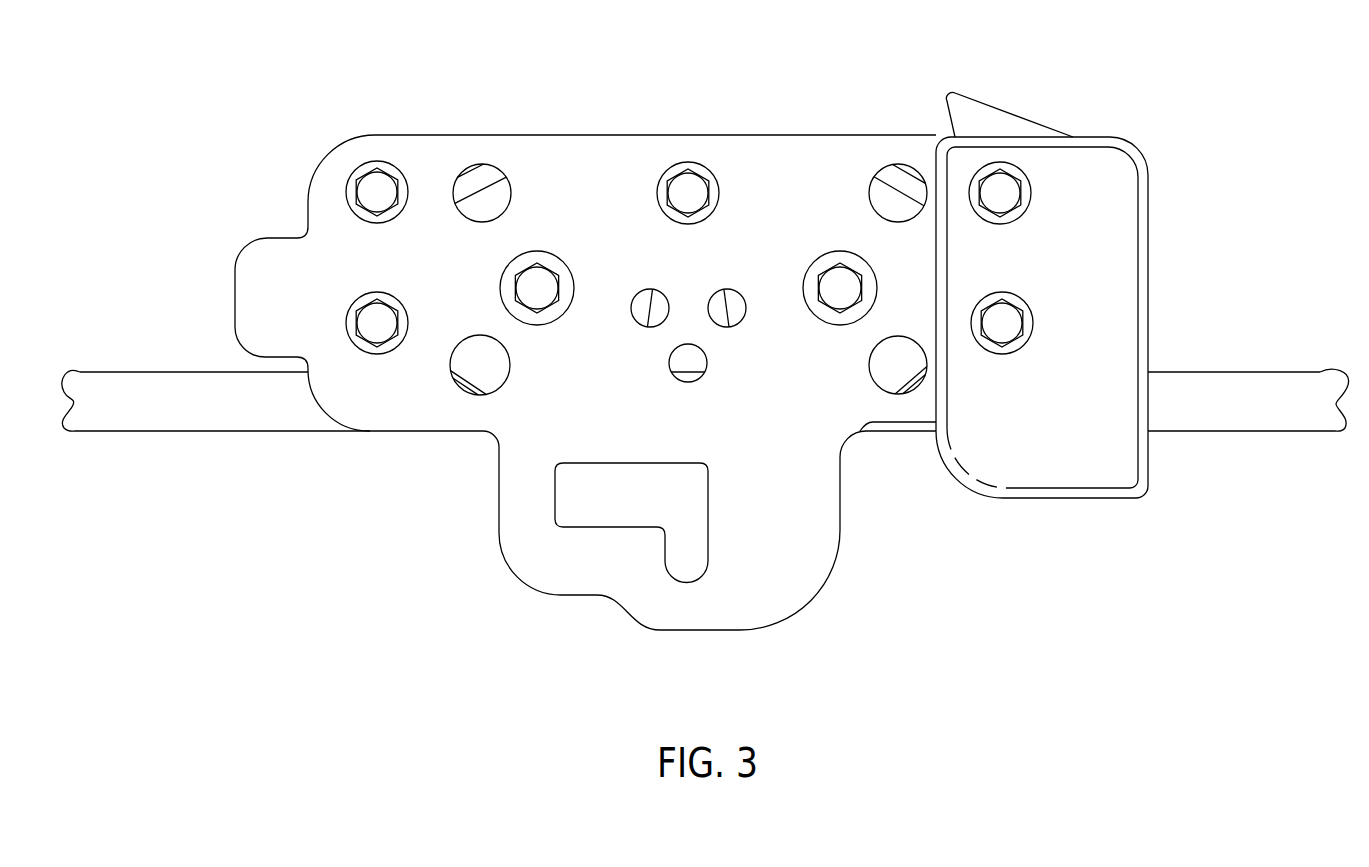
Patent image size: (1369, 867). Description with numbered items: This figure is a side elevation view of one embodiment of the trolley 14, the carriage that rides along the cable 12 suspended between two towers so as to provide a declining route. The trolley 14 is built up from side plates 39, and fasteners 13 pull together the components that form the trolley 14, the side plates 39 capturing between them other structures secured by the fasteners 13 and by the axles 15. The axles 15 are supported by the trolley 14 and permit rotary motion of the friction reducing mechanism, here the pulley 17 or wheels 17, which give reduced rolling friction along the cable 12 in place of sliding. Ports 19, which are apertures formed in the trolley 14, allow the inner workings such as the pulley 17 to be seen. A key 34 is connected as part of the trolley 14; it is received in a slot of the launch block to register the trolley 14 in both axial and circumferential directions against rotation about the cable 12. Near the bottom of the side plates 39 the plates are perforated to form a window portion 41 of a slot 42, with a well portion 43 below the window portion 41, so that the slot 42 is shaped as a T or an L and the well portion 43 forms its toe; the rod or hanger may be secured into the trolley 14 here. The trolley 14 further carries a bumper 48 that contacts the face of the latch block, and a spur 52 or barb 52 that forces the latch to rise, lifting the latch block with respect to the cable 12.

The cable 12 is at (147, 362).
The fasteners 13 is at (372, 192).
The trolley 14 is at (398, 124).
The axles 15 is at (545, 285).
The pulley 17 is at (492, 357).
The ports 19 is at (508, 378).
The key 34 is at (285, 306).
The side plates 39 is at (598, 201).
The window portion 41 is at (622, 473).
The slot 42 is at (678, 548).
The well portion 43 is at (688, 565).
The bumper 48 is at (1066, 420).
The spur 52 is at (968, 103).